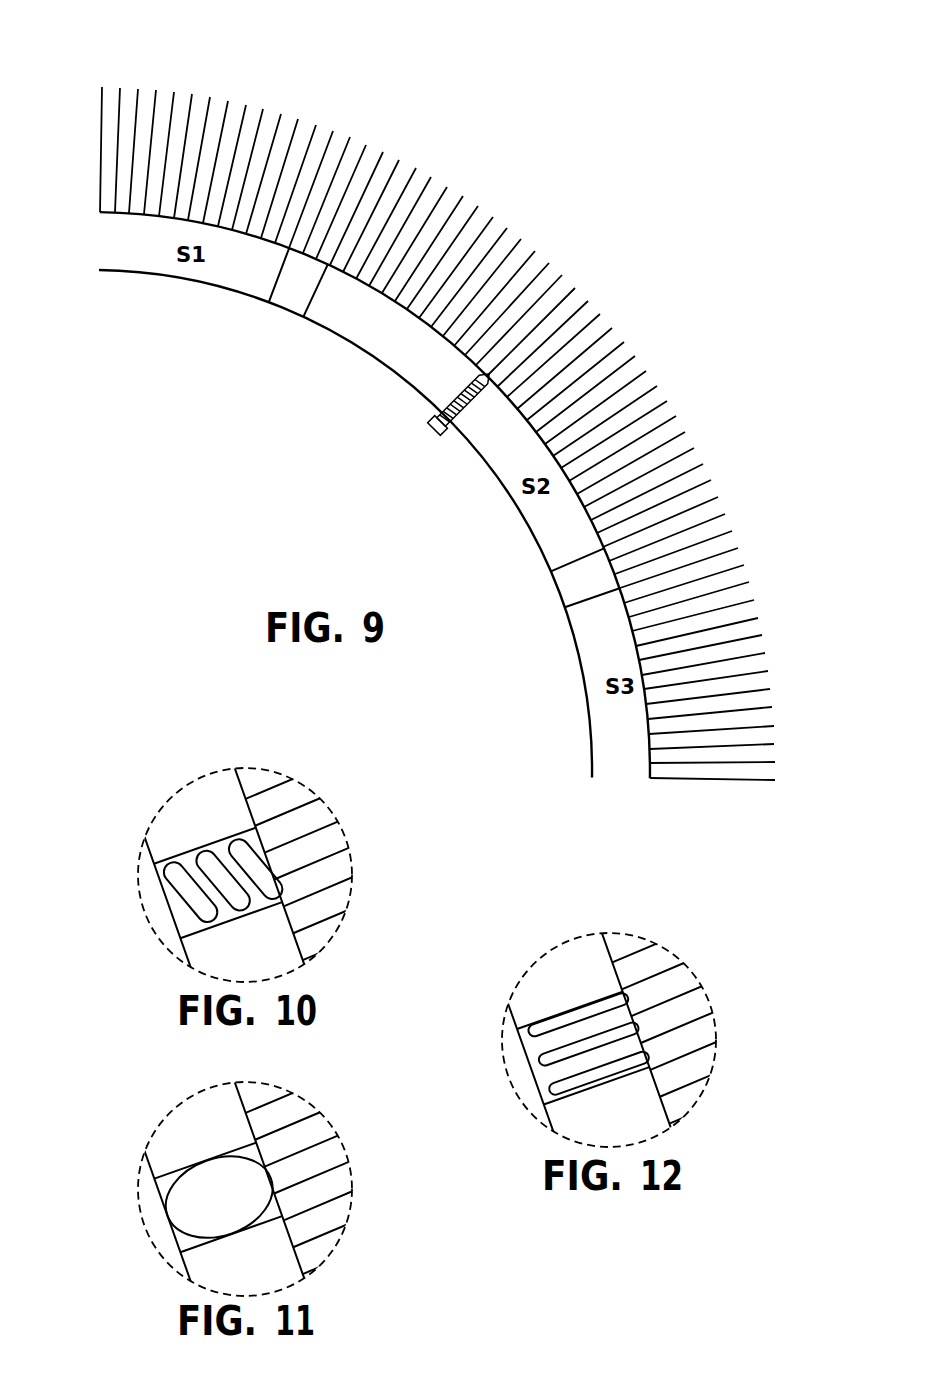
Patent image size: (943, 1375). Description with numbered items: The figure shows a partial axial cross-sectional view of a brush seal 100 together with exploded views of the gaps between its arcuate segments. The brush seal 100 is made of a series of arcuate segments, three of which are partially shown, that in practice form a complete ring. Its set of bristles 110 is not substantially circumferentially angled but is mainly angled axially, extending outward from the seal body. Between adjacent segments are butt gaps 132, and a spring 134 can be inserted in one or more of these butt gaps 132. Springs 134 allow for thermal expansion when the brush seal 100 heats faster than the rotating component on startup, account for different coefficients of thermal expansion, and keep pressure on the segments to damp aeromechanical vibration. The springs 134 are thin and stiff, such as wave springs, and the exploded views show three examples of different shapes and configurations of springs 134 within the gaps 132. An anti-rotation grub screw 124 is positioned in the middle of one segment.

In FIG. 9, the brush seal 100 is at (72, 80).
In FIG. 9, the set of bristles 110 is at (785, 669).
In FIG. 9, the anti-rotation grub screw 124 is at (442, 432).
In FIG. 9, the butt gaps 132 is at (282, 314).
In FIG. 10, the butt gaps 132 is at (160, 908).
In FIG. 11, the butt gaps 132 is at (160, 1222).
In FIG. 12, the butt gaps 132 is at (525, 1073).
In FIG. 10, the spring 134 is at (192, 860).
In FIG. 11, the spring 134 is at (173, 1182).
In FIG. 12, the spring 134 is at (550, 1032).